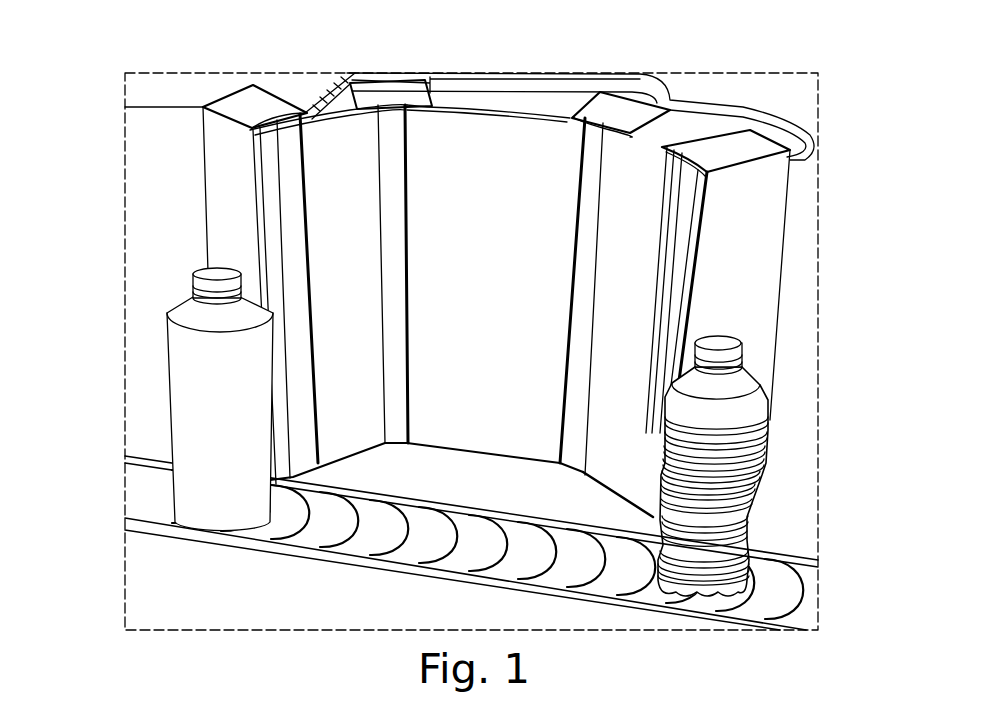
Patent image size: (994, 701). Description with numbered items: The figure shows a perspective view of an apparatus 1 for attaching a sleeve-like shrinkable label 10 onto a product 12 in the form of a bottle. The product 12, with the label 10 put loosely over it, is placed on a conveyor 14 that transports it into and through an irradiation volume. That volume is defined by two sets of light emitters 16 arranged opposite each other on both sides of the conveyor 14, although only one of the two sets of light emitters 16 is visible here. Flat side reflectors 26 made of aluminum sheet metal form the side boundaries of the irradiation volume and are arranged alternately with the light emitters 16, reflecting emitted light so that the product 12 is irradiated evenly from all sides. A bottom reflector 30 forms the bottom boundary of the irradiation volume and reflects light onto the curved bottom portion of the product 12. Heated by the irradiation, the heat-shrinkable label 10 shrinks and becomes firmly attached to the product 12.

The apparatus 1 is at (178, 72).
The sleeve-like shrinkable label 10 is at (167, 347).
The product 12 is at (190, 285).
The conveyor 14 is at (560, 573).
The light emitters 16 is at (303, 347).
The side reflectors 26 is at (630, 158).
The bottom reflector 30 is at (560, 507).